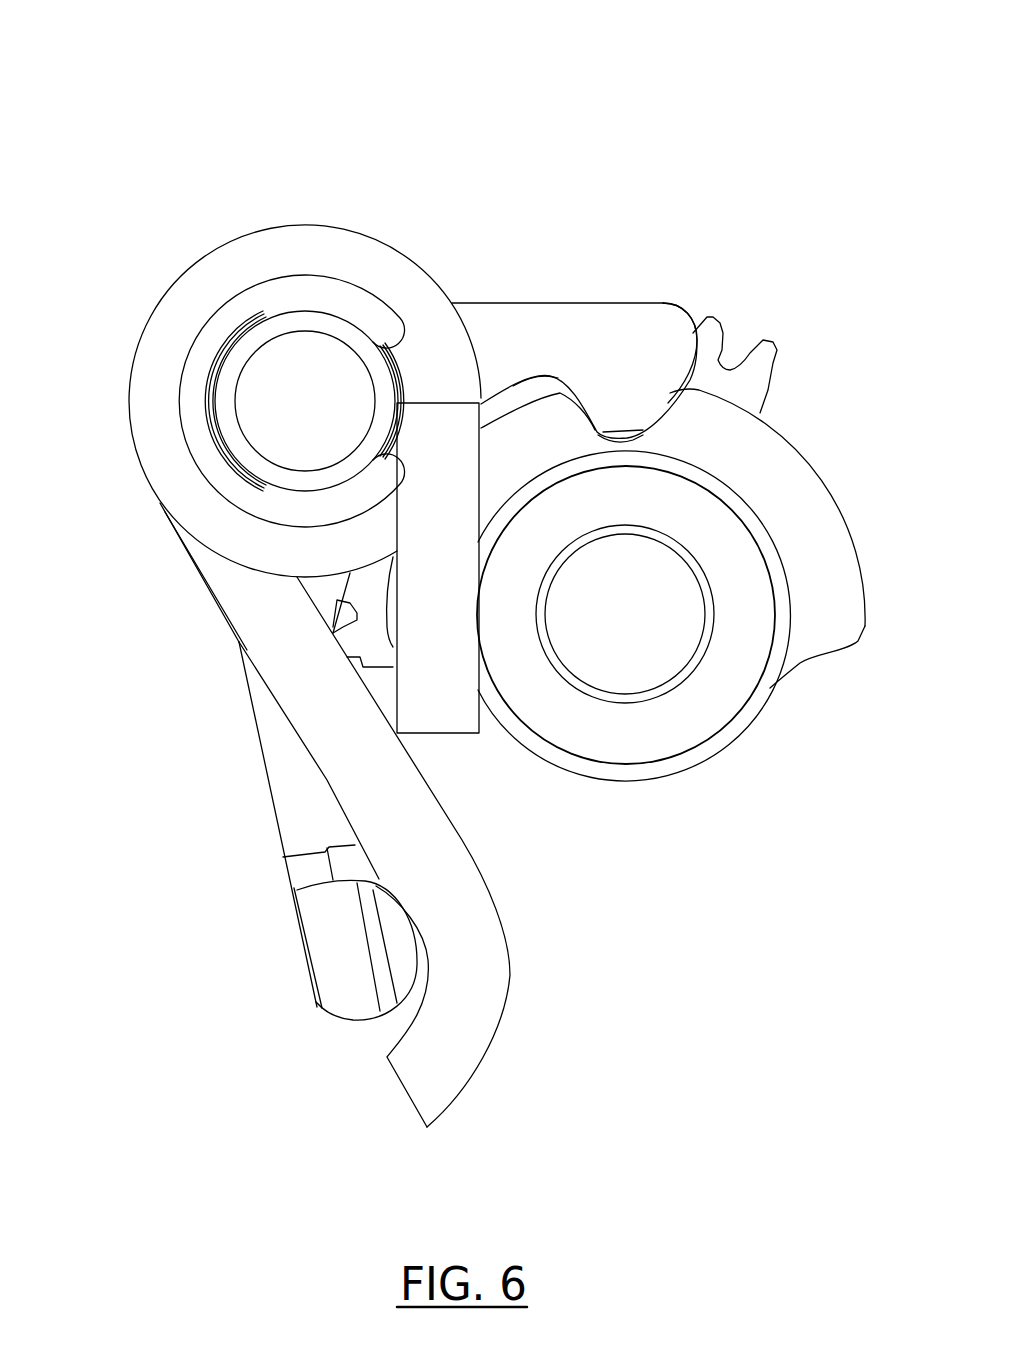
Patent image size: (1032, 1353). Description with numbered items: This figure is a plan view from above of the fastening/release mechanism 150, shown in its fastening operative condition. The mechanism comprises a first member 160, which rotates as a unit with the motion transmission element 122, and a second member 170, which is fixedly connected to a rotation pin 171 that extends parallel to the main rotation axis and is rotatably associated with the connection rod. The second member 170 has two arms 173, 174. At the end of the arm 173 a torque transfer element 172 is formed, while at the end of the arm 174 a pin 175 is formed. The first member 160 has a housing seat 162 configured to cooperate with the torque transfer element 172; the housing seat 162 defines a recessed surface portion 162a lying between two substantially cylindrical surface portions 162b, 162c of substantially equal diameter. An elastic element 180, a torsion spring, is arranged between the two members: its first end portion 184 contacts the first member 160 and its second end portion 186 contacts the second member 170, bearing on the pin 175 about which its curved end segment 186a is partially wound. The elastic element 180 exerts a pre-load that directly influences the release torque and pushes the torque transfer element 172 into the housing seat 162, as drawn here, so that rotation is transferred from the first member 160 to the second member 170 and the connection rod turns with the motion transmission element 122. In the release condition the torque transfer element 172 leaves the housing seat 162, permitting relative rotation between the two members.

The fastening/release mechanism 150 is at (188, 87).
The elastic element 180 is at (213, 277).
The rotation pin 171 is at (265, 391).
The second member 170 is at (543, 288).
The arm 173 is at (595, 313).
The cylindrical surface portion 162c is at (533, 393).
The recessed surface portion 162a is at (600, 430).
The torque transfer element 172 is at (640, 397).
The housing seat 162 is at (643, 447).
The cylindrical surface portion 162b is at (803, 445).
The first member 160 is at (815, 668).
The motion transmission element 122 is at (636, 640).
The first end portion 184 is at (447, 707).
The second end portion 186 is at (328, 713).
The curved end segment 186a is at (470, 1052).
The arm 174 is at (308, 792).
The pin 175 is at (397, 930).